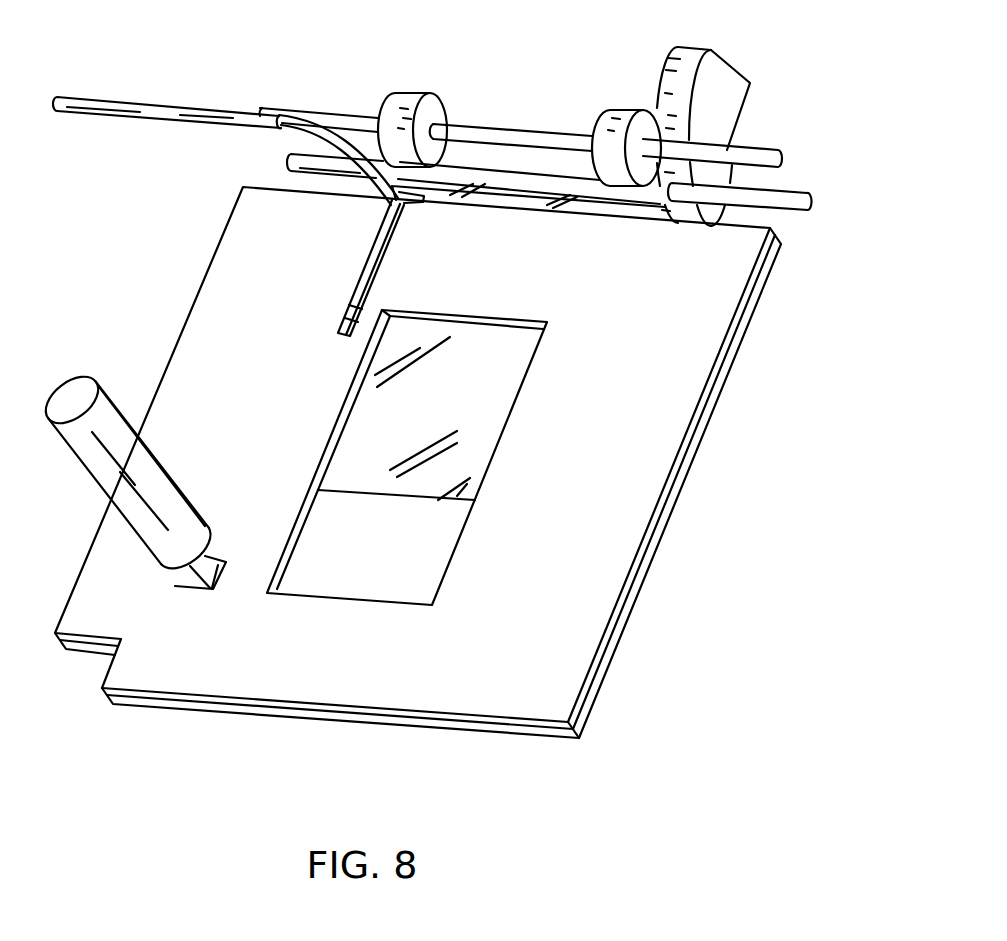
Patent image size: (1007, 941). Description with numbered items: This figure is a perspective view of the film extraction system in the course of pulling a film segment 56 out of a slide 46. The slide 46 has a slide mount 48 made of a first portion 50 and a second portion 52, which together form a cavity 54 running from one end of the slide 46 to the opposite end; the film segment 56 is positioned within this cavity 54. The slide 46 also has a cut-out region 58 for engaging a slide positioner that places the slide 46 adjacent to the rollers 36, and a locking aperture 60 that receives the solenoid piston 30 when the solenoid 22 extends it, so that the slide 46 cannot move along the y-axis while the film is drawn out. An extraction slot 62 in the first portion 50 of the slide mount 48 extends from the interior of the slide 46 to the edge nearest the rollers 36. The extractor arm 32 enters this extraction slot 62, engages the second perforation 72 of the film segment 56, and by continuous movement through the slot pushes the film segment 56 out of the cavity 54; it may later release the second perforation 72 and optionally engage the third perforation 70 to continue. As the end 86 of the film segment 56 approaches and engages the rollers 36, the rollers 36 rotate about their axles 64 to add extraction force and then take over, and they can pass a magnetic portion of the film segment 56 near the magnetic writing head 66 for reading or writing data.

The solenoid 22 is at (118, 412).
The solenoid piston 30 is at (205, 560).
The extractor arm 32 is at (175, 107).
The roller 36 is at (440, 112).
The slide 46 is at (796, 389).
The slide mount 48 is at (723, 312).
The first portion 50 is at (512, 726).
The second portion 52 is at (557, 737).
The cavity 54 is at (326, 712).
The film segment 56 is at (497, 407).
The cut-out region 58 is at (78, 653).
The locking aperture 60 is at (192, 578).
The extraction slot 62 is at (370, 263).
The axles 64 is at (783, 157).
The magnetic writing head 66 is at (725, 70).
The third perforation 70 is at (362, 311).
The second perforation 72 is at (427, 200).
The end of film segment 86 is at (603, 207).